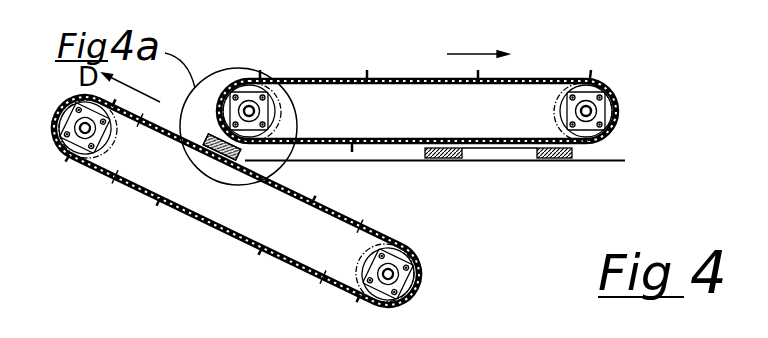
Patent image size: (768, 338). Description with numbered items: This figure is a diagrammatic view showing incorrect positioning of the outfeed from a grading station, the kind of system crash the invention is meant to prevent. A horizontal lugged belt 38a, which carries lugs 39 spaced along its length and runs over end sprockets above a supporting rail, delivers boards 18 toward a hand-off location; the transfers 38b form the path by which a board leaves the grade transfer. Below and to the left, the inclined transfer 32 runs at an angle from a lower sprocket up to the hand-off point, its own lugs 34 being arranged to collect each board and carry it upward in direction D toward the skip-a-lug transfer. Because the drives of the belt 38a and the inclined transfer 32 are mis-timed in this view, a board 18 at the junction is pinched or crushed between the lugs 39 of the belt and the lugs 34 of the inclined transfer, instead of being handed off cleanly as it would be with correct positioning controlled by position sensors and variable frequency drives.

The boards 18 is at (208, 148).
The inclined transfer 32 is at (277, 200).
The lugs 34 is at (410, 240).
The belt 38a is at (543, 79).
The transfers 38b is at (620, 160).
The lugs 39 is at (367, 76).